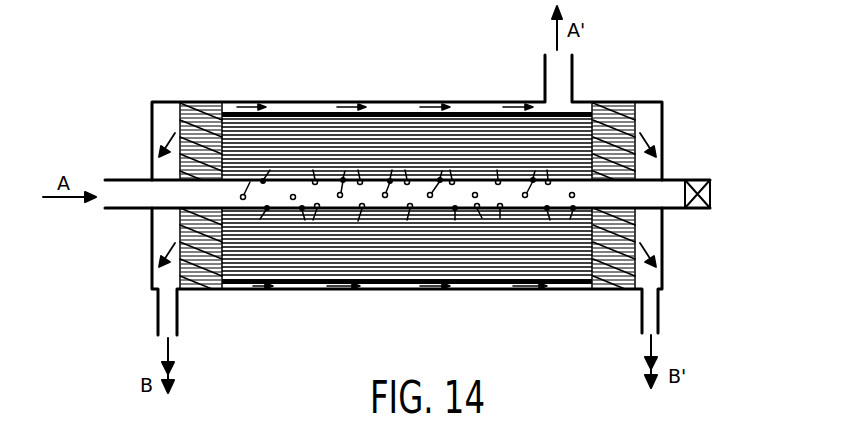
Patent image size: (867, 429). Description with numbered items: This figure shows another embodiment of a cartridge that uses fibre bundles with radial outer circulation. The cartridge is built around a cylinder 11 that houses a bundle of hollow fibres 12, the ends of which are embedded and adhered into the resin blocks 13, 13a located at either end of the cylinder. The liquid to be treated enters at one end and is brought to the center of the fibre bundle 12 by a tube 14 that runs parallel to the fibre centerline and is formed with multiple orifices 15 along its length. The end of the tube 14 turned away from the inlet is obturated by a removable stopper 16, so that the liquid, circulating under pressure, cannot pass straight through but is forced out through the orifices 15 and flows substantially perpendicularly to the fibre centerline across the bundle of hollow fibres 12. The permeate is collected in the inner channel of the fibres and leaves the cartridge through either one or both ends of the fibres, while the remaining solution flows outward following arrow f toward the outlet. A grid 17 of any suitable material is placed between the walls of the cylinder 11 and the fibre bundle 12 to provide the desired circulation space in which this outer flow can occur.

The cylinder 11 is at (407, 293).
The bundle of hollow fibres 12 is at (492, 260).
The resin block 13 is at (212, 128).
The resin block 13a is at (622, 117).
The tube 14 is at (140, 212).
The orifices 15 is at (293, 194).
The removable stopper 16 is at (706, 177).
The grid 17 is at (288, 290).
The arrow f is at (249, 98).